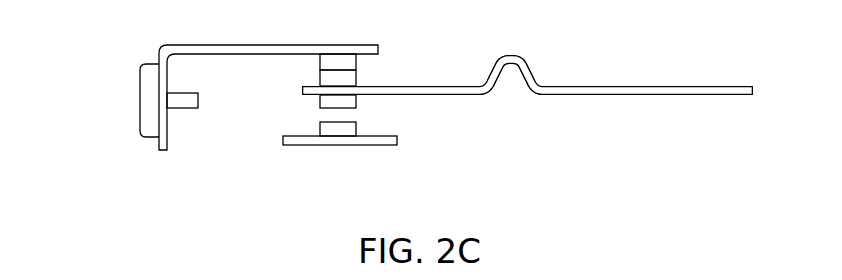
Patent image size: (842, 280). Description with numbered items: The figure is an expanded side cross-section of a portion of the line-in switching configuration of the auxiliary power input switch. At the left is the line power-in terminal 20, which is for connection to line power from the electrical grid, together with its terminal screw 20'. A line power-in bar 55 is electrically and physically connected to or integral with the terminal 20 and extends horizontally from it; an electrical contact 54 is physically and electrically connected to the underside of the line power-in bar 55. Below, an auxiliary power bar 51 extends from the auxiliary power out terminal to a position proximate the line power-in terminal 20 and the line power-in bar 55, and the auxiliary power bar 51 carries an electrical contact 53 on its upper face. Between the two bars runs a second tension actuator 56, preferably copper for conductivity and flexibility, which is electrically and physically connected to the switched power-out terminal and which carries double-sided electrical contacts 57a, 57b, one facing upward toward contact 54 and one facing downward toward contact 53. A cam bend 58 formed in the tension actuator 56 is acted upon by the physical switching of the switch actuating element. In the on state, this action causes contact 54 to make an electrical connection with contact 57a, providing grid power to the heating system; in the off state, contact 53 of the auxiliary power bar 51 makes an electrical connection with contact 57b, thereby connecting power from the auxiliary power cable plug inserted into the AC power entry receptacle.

The line power-in terminal 20 is at (229, 75).
The terminal screw 20' is at (119, 100).
The auxiliary power bar 51 is at (378, 158).
The electrical contact 53 is at (368, 128).
The electrical contact 54 is at (358, 61).
The line power-in bar 55 is at (218, 45).
The second tension actuator 56 is at (527, 52).
The electrical contact 57a is at (366, 77).
The electrical contact 57b is at (368, 103).
The cam bend 58 is at (535, 72).